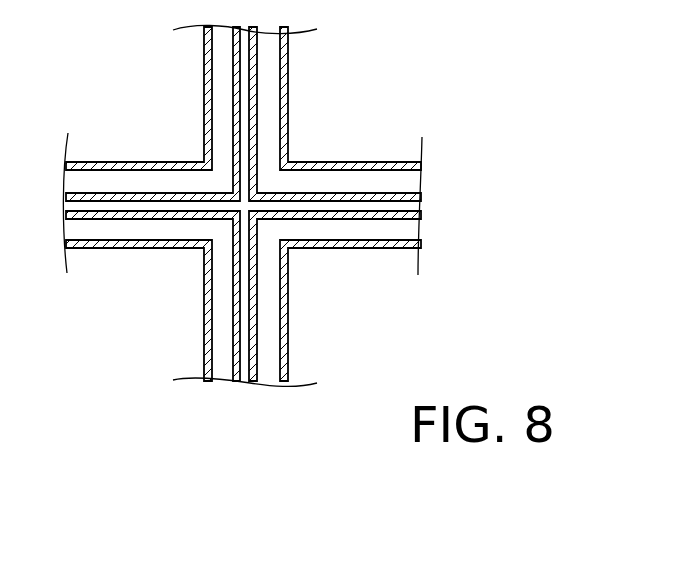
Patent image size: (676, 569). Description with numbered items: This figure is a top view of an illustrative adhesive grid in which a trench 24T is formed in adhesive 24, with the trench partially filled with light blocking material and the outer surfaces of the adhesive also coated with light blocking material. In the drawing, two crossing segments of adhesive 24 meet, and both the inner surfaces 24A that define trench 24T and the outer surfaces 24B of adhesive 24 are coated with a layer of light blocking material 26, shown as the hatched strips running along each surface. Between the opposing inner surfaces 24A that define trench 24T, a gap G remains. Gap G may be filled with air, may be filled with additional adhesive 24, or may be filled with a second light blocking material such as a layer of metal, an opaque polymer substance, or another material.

The adhesive 24 is at (221, 76).
The light blocking material 26 is at (289, 89).
The inner surfaces 24A is at (337, 176).
The trench 24T is at (148, 206).
The outer surfaces 24B is at (218, 310).
The gap G is at (245, 138).